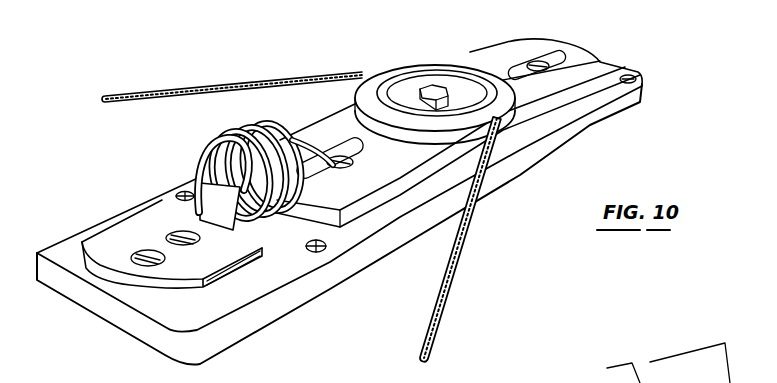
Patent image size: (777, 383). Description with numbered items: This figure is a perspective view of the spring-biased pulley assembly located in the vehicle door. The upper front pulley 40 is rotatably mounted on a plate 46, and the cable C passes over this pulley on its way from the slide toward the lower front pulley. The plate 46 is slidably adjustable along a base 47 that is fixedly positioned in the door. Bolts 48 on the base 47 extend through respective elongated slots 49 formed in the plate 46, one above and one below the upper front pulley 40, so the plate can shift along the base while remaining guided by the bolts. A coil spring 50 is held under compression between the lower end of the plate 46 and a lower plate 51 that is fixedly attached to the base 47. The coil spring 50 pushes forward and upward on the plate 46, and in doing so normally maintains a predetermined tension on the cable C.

The upper front pulley 40 is at (412, 72).
The plate 46 is at (578, 63).
The base 47 is at (308, 287).
The bolts 48 is at (330, 170).
The elongated slots 49 is at (338, 166).
The coil spring 50 is at (202, 147).
The lower plate 51 is at (110, 240).
The cable C is at (193, 93).